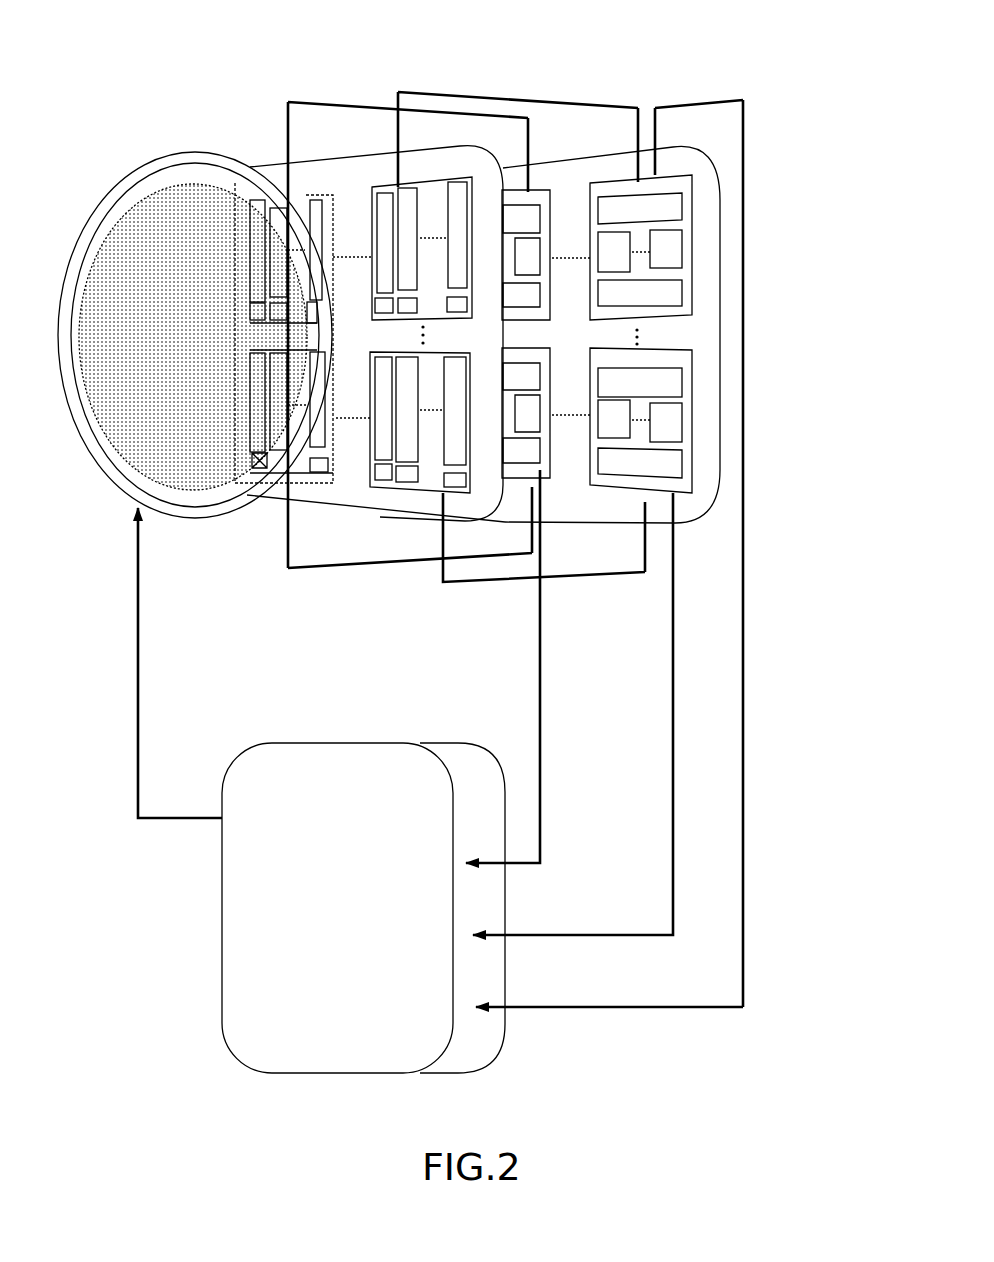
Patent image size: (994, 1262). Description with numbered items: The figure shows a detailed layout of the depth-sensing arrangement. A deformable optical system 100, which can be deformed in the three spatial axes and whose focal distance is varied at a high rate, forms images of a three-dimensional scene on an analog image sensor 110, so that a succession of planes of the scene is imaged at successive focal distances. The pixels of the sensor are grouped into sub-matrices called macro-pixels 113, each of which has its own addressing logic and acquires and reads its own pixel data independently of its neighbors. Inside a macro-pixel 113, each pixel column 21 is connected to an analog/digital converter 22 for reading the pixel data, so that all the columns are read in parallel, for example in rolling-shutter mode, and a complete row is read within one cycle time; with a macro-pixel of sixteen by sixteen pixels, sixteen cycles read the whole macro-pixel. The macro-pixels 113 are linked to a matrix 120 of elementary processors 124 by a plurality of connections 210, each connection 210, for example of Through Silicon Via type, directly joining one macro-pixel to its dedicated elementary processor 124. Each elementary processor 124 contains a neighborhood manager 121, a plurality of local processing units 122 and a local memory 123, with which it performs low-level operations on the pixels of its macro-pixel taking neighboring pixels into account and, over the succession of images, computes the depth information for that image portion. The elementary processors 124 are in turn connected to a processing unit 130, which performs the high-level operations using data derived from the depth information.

The deformable optical system 100 is at (140, 165).
The analog image sensor 110 is at (279, 157).
The macro-pixel 113 is at (370, 213).
The pixel column 21 is at (345, 490).
The analog/digital converter 22 is at (385, 313).
The matrix of elementary processors 120 is at (600, 156).
The neighborhood manager 121 is at (678, 207).
The local processing unit 122 is at (598, 242).
The local memory 123 is at (690, 291).
The elementary processor 124 is at (692, 303).
The processing unit 130 is at (222, 968).
The connection 210 is at (355, 105).